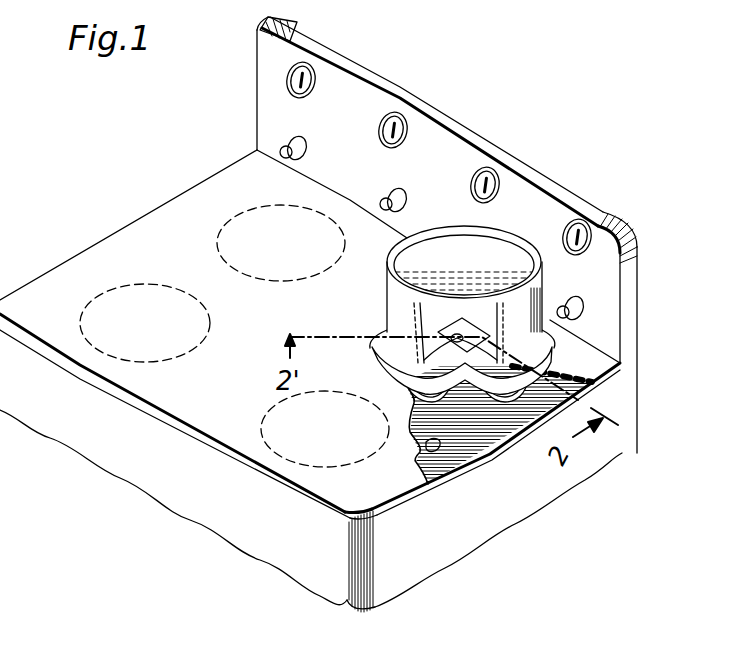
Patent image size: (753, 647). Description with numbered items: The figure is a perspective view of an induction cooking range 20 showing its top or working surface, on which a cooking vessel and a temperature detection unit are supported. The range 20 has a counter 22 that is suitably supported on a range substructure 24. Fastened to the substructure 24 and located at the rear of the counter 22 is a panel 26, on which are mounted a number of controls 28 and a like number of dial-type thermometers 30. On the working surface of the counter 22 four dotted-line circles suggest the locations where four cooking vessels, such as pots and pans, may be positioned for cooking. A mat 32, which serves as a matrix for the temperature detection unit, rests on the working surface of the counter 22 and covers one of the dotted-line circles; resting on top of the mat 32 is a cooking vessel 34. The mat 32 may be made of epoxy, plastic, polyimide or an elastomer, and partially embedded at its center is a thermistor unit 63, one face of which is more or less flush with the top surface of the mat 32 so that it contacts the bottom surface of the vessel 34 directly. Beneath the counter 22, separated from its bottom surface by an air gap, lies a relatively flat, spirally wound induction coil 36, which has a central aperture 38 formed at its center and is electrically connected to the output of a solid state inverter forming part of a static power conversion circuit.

The induction cooking range 20 is at (172, 186).
The counter 22 is at (426, 443).
The range substructure 24 is at (473, 527).
The panel 26 is at (616, 214).
The controls 28 is at (290, 147).
The dial-type thermometers 30 is at (316, 77).
The mat 32 is at (383, 327).
The cooking vessel 34 is at (538, 300).
The induction coil 36 is at (472, 405).
The central aperture 38 is at (462, 378).
The thermistor unit 63 is at (455, 334).